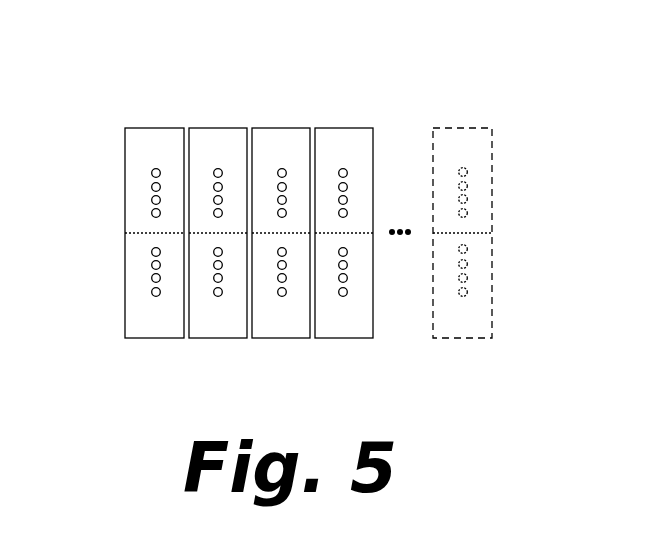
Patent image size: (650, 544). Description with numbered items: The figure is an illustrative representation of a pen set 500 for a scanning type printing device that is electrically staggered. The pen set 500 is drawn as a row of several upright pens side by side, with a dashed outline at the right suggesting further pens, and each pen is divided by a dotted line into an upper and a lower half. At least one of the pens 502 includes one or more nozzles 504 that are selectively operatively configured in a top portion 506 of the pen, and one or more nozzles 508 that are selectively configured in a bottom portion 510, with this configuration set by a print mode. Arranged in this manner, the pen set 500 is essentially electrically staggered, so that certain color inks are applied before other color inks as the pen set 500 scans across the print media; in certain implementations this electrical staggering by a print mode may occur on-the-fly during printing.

The pen set 500 is at (158, 82).
The pen 502 is at (148, 340).
The nozzles 504 is at (152, 169).
The top portion 506 is at (137, 192).
The nozzles 508 is at (158, 296).
The bottom portion 510 is at (137, 272).